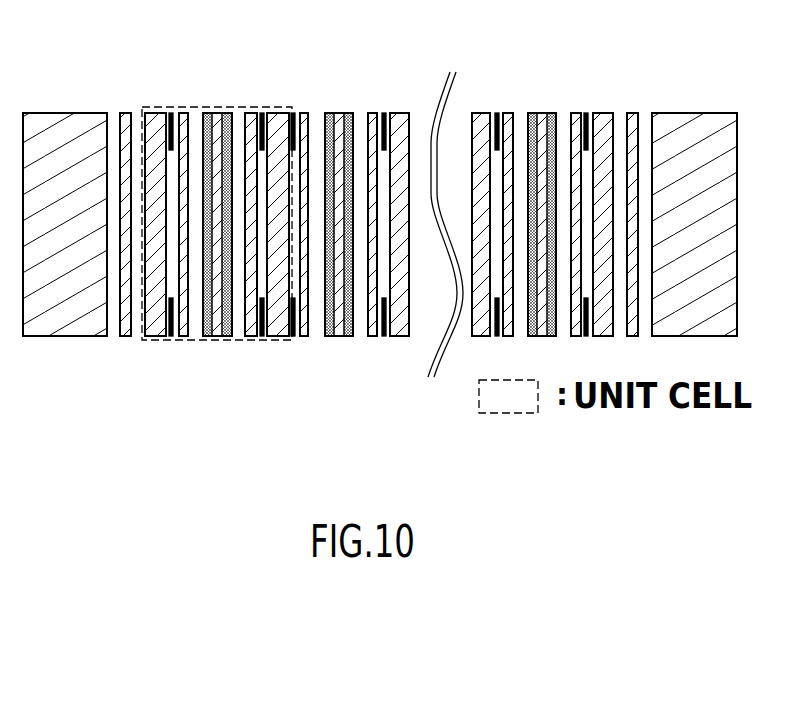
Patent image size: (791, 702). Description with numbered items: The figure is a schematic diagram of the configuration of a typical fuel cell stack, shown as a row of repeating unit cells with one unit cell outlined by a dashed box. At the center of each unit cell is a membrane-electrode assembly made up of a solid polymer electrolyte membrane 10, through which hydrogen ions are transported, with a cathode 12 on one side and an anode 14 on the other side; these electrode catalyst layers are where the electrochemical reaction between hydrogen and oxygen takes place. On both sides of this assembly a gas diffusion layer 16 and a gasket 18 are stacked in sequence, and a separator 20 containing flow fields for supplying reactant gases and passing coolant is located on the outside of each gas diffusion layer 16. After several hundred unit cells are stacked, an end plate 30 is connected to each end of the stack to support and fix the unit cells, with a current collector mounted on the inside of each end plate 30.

The end plate 30 is at (65, 178).
The separator 20 is at (206, 281).
The gasket 18 is at (229, 179).
The gas diffusion layer 16 is at (237, 176).
The anode 14 is at (192, 287).
The solid polymer electrolyte membrane 10 is at (227, 287).
The cathode 12 is at (257, 275).